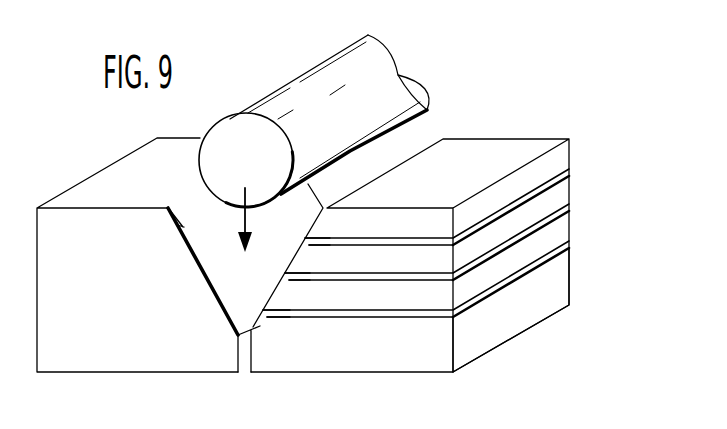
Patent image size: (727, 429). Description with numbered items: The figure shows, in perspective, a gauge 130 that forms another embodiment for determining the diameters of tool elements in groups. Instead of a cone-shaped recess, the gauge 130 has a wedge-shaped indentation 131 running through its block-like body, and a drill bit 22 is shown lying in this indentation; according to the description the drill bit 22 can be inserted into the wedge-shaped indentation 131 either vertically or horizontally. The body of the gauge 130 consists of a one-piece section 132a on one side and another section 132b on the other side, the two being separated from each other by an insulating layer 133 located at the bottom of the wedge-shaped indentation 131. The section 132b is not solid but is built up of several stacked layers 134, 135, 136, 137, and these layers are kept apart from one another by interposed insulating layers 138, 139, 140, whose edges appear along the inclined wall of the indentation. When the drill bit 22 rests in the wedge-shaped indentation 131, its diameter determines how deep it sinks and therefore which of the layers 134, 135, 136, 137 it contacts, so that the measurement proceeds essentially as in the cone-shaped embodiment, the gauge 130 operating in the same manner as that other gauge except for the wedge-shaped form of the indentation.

The drill bit 22 is at (311, 76).
The gauge 130 is at (484, 131).
The wedge-shaped indentation 131 is at (171, 206).
The one-piece section 132a is at (133, 350).
The section 132b is at (328, 355).
The insulating layer 133 is at (245, 362).
The layer 134 is at (563, 284).
The layer 135 is at (563, 233).
The layer 136 is at (560, 200).
The layer 137 is at (562, 164).
The insulating layer 138 is at (282, 305).
The insulating layer 139 is at (298, 271).
The insulating layer 140 is at (320, 236).